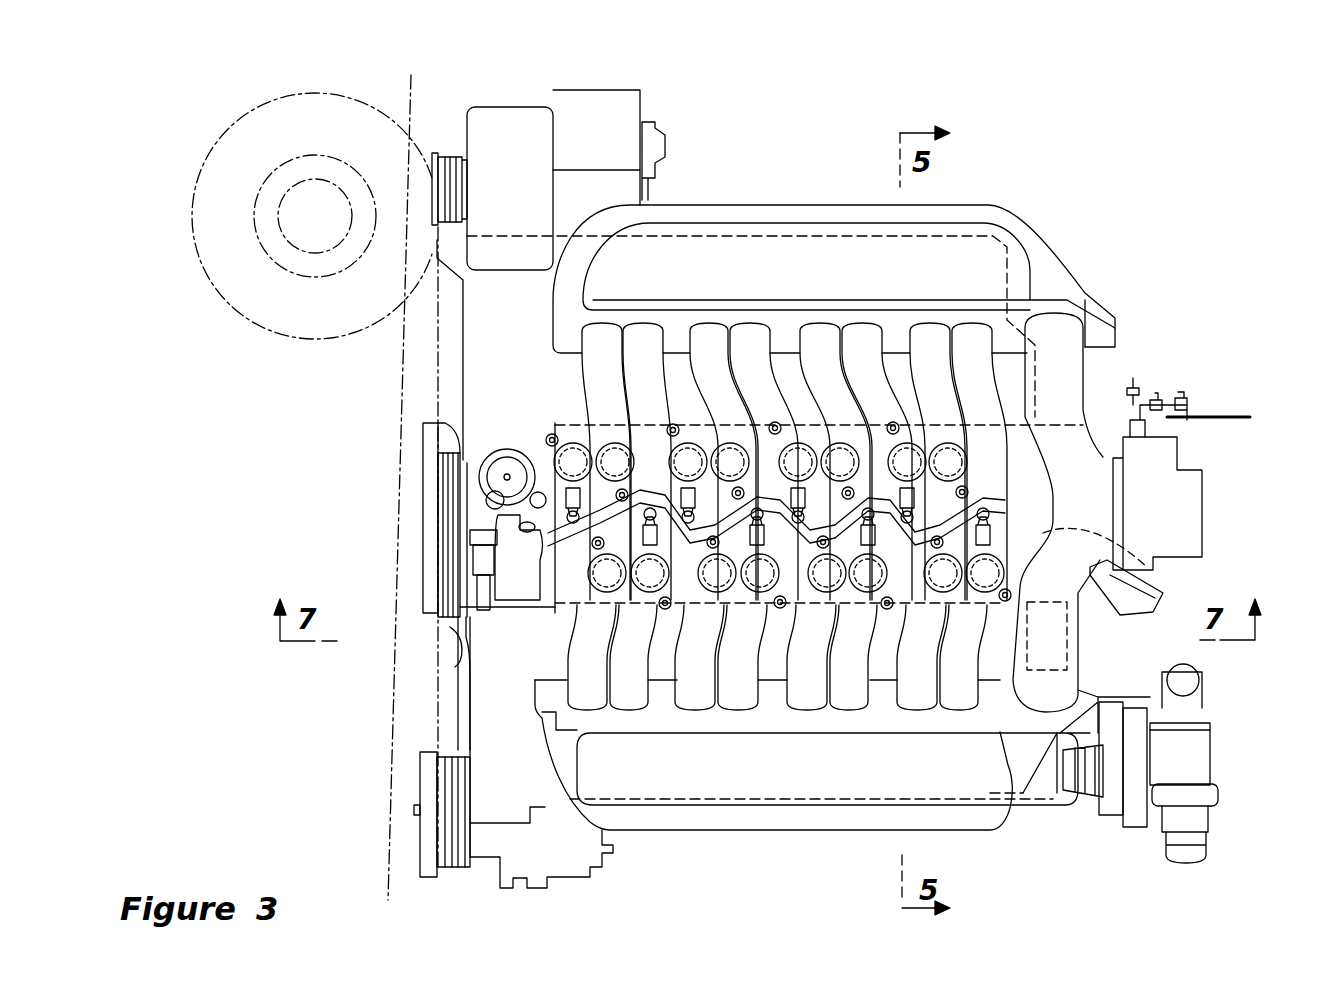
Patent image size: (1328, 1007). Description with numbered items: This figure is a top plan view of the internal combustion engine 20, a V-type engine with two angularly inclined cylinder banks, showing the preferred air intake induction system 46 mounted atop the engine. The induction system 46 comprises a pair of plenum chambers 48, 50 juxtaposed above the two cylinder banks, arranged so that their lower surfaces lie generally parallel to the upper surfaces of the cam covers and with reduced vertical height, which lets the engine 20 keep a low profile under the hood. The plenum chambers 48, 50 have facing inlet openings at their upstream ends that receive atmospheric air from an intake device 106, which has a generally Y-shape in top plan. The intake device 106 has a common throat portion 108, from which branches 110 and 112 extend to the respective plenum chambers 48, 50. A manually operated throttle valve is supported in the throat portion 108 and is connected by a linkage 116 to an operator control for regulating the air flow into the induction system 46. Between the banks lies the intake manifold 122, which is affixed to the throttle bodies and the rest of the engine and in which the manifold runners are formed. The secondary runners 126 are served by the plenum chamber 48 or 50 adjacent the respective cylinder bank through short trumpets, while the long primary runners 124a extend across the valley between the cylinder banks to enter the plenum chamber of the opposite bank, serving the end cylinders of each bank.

The internal combustion engine 20 is at (1113, 143).
The air intake induction system 46 is at (1143, 362).
The plenum chamber 48 is at (752, 205).
The plenum chamber 50 is at (770, 830).
The intake device 106 is at (1098, 443).
The common throat portion 108 is at (1190, 560).
The branch 110 is at (1085, 370).
The branch 112 is at (1082, 668).
The linkage 116 is at (1190, 403).
The intake manifold 122 is at (993, 371).
The long primary runner 124a is at (557, 643).
The secondary runner 126 is at (580, 387).